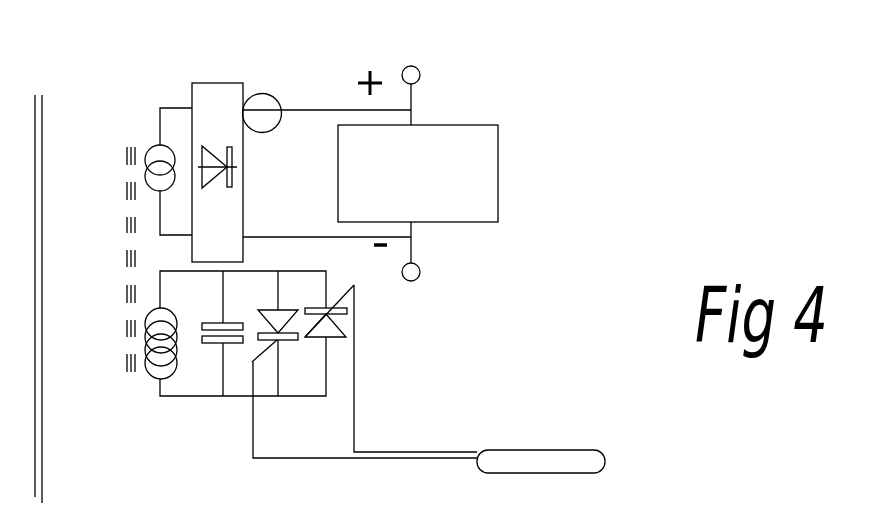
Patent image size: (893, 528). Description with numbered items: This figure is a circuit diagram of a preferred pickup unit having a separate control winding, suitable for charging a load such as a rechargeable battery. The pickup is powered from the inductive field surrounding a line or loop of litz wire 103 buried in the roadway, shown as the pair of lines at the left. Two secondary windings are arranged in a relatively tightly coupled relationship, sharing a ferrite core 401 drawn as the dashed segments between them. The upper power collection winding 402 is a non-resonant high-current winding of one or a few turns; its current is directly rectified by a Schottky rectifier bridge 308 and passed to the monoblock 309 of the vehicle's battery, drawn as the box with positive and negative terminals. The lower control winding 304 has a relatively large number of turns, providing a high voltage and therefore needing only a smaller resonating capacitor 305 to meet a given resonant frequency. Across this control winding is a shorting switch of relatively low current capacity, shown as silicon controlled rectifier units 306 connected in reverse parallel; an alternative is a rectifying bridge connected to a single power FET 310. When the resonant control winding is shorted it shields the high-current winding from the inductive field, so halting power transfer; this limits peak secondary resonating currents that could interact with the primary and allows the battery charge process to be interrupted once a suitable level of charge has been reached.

The litz wire 103 is at (40, 503).
The ferrite core 401 is at (125, 228).
The power collection winding 402 is at (157, 146).
The Schottky rectifier bridge 308 is at (262, 88).
The monoblock 309 is at (435, 125).
The control winding 304 is at (150, 382).
The resonant capacitor 305 is at (215, 345).
The silicon controlled rectifier units 306 is at (364, 364).
The power FET 310 is at (531, 482).